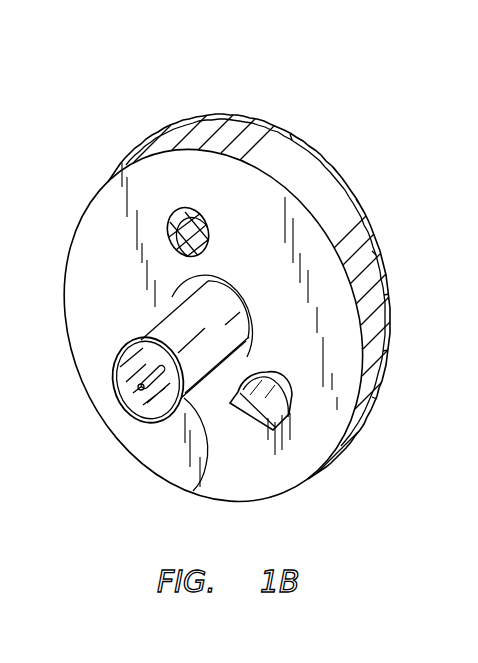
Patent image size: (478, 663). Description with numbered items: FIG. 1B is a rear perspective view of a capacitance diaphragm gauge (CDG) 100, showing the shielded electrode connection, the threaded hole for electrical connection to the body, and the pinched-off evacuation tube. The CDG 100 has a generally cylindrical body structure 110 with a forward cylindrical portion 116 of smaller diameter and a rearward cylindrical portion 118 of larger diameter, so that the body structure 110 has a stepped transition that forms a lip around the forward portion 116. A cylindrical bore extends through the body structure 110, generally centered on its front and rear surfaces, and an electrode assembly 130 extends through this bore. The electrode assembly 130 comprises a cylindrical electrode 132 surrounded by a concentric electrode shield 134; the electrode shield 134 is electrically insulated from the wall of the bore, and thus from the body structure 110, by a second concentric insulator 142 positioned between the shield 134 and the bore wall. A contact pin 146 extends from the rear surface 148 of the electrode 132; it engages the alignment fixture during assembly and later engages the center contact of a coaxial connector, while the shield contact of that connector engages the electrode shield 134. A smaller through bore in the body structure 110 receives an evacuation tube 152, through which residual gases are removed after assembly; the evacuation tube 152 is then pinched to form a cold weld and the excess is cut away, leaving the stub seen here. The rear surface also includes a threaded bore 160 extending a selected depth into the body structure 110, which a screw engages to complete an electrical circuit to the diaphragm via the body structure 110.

The capacitance diaphragm gauge 100 is at (312, 79).
The body structure 110 is at (377, 313).
The forward cylindrical portion 116 is at (333, 170).
The rearward cylindrical portion 118 is at (357, 250).
The electrode assembly 130 is at (200, 478).
The cylindrical electrode 132 is at (139, 434).
The electrode shield 134 is at (130, 388).
The second concentric insulator 142 is at (250, 330).
The contact pin 146 is at (137, 412).
The rear surface of the electrode 148 is at (147, 352).
The evacuation tube 152 is at (275, 432).
The threaded bore 160 is at (165, 230).